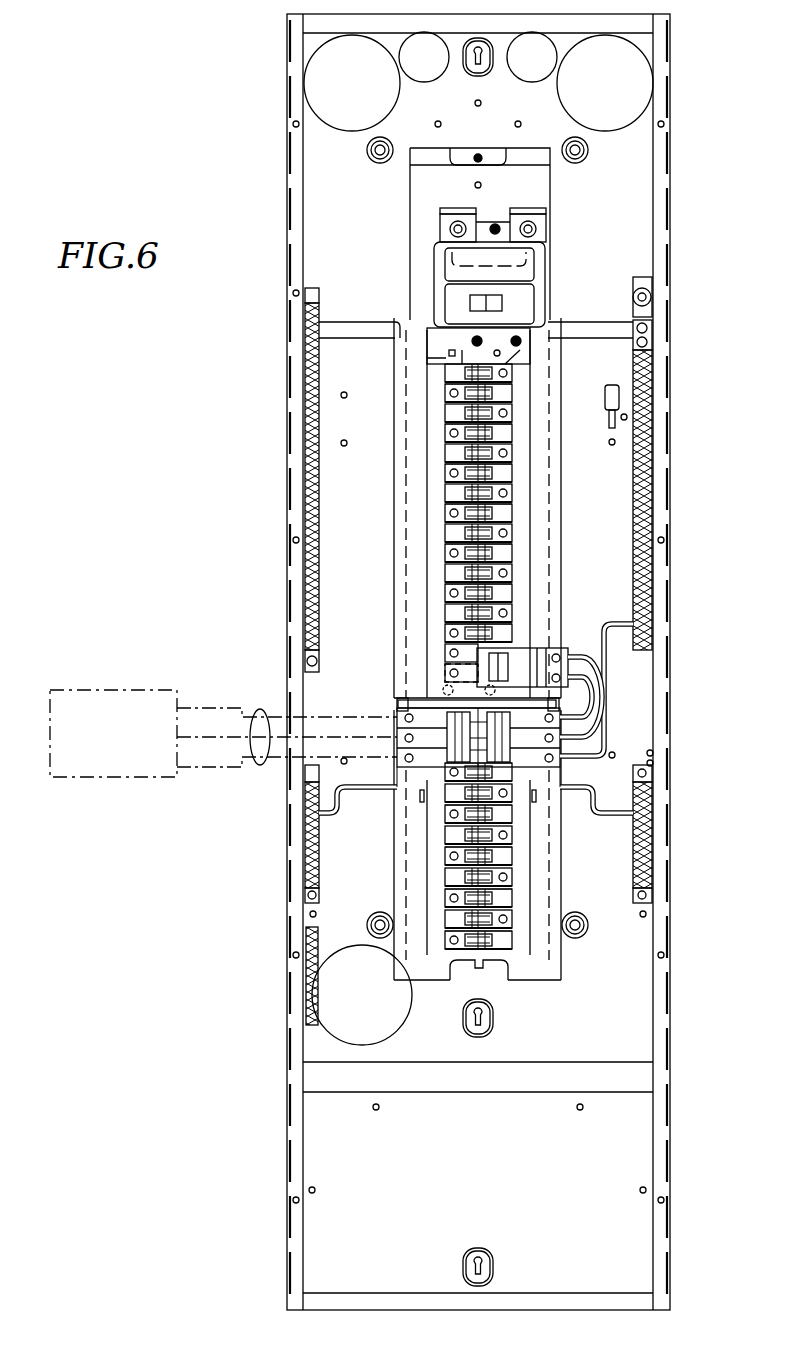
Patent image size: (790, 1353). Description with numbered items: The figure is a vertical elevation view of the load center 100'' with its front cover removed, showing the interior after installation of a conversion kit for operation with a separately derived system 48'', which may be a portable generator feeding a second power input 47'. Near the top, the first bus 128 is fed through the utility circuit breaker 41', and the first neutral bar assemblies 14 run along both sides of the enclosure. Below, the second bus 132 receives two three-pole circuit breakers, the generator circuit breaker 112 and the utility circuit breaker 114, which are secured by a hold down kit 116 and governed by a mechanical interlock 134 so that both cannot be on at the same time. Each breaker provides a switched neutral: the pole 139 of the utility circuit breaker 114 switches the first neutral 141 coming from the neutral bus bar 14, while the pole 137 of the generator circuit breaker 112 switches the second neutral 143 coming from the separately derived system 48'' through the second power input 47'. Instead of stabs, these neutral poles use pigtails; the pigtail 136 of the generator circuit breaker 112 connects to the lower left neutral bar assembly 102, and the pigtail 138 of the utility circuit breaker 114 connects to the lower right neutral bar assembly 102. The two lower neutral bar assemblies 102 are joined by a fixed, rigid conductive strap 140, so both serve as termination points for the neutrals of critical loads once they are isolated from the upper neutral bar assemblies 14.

The load center 100'' is at (438, 662).
The neutral bar assemblies 14 is at (306, 462).
The neutral bar assemblies 102 is at (305, 857).
The first bus 128 is at (526, 490).
The second bus 132 is at (540, 920).
The utility circuit breaker 41' is at (541, 640).
The mechanical interlock 134 is at (447, 682).
The hold down kit 116 is at (401, 700).
The generator circuit breaker 112 is at (386, 728).
The utility circuit breaker 114 is at (578, 727).
The first neutral 141 is at (608, 658).
The conductive strap 140 is at (582, 795).
The pigtail 138 is at (598, 774).
The pigtail 136 is at (318, 823).
The switched-neutral pole 137 is at (428, 776).
The switched-neutral pole 139 is at (528, 764).
The separately derived system 48'' is at (123, 754).
The second neutral 143 is at (231, 768).
The second power input 47' is at (251, 718).